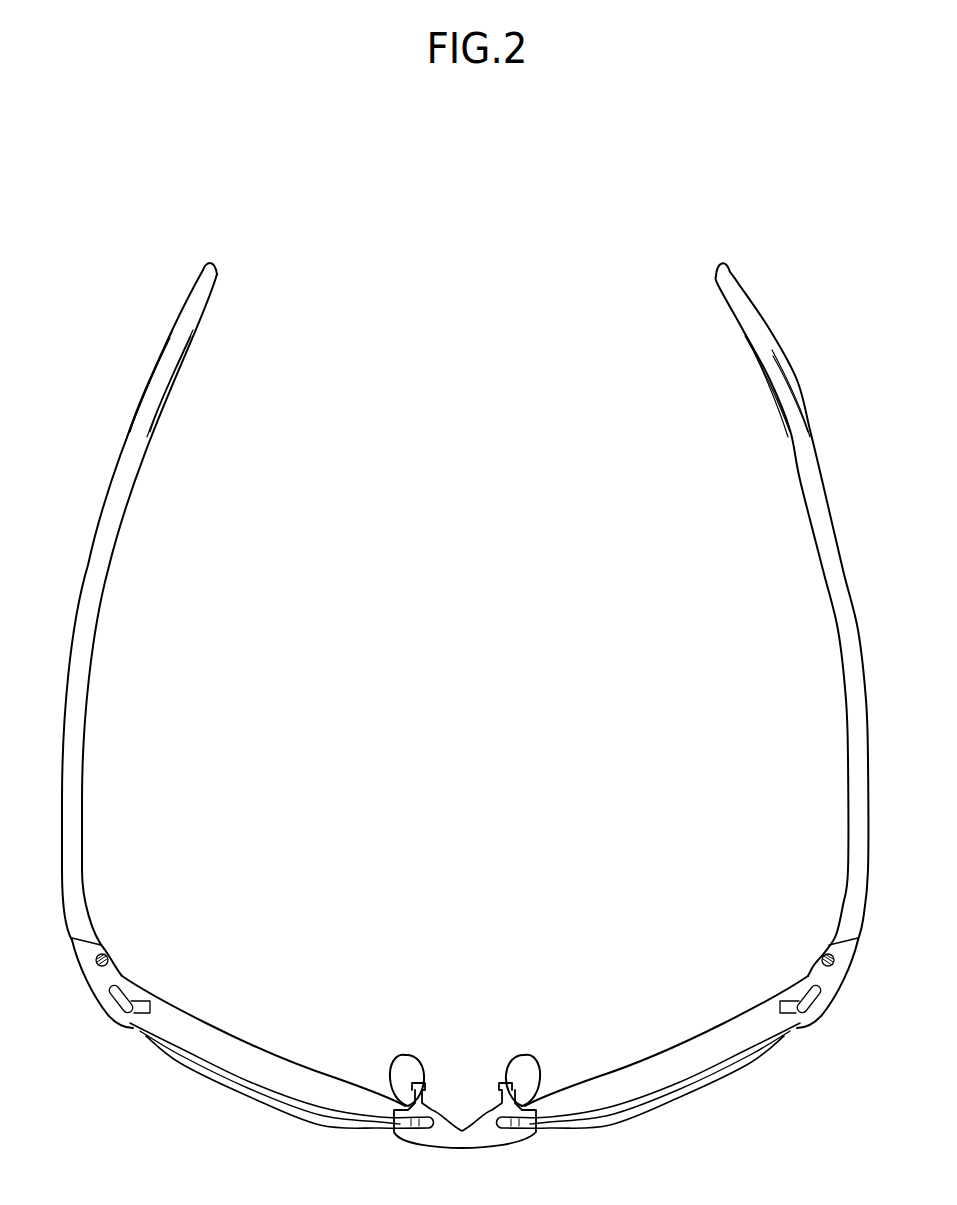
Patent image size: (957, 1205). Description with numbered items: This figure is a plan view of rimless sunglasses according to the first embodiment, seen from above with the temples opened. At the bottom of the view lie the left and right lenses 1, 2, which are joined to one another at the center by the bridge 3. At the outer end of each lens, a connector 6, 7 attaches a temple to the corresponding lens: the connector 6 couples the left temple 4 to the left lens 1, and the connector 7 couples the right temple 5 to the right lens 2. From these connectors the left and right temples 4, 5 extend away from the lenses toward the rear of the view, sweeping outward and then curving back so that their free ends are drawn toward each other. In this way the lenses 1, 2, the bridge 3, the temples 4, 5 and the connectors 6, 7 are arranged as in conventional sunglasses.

The left lens 1 is at (272, 1058).
The right lens 2 is at (667, 1058).
The bridge 3 is at (461, 1130).
The left temple 4 is at (111, 527).
The right temple 5 is at (819, 527).
The connector 6 is at (114, 978).
The connector 7 is at (815, 978).